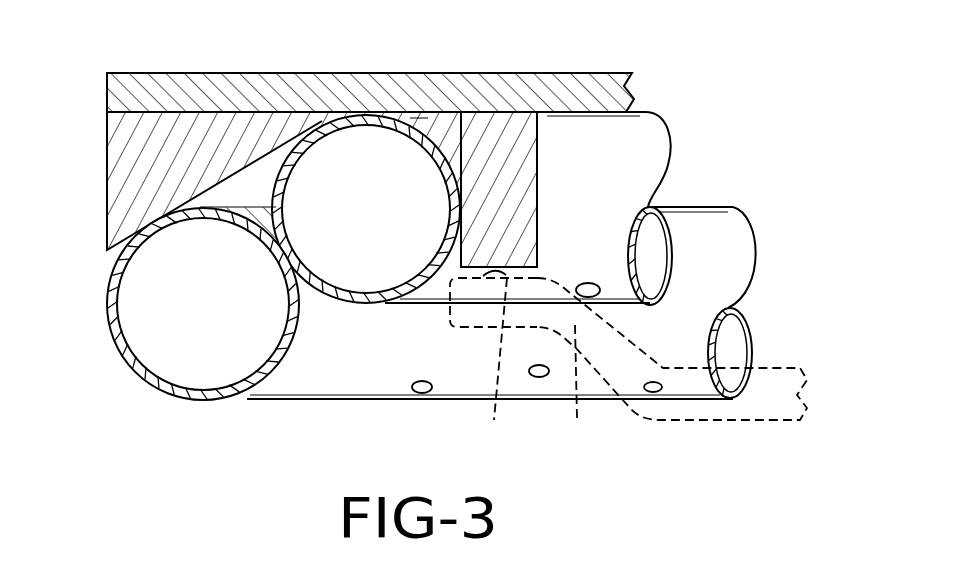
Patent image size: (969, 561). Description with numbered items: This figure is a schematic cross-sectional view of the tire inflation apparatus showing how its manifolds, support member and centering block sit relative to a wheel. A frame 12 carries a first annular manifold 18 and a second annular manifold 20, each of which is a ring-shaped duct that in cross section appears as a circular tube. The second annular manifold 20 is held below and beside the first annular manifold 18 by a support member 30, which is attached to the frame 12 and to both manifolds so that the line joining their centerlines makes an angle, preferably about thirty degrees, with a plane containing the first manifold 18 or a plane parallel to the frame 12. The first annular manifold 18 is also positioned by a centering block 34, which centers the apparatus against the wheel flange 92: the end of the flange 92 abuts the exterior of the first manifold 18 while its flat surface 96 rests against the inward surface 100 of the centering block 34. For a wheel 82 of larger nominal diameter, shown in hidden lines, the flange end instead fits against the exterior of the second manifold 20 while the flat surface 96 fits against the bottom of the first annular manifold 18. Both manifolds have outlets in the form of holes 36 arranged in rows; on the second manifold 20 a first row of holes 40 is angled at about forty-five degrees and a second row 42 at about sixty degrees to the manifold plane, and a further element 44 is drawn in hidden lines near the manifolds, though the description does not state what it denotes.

The frame 12 is at (174, 94).
The first annular manifold 18 is at (432, 152).
The second annular manifold 20 is at (115, 316).
The support member 30 is at (142, 164).
The centering block 34 is at (507, 168).
The holes 36 is at (598, 291).
The first row of holes 40 is at (538, 378).
The second row of holes 42 is at (422, 393).
The opening 44 is at (450, 317).
The wheel 82 is at (779, 392).
The wheel flange 92 is at (577, 389).
The flat surface 96 is at (497, 365).
The inward surface 100 is at (518, 265).